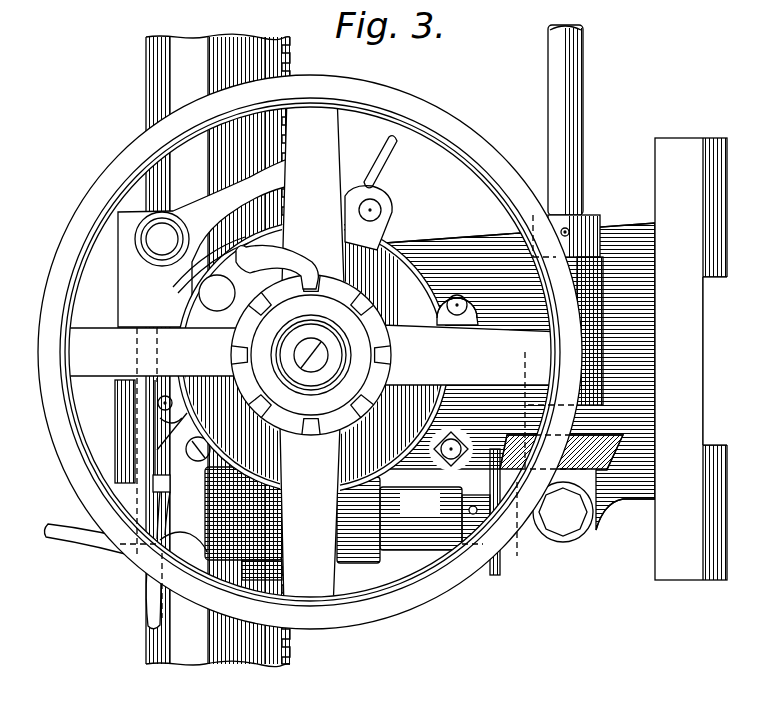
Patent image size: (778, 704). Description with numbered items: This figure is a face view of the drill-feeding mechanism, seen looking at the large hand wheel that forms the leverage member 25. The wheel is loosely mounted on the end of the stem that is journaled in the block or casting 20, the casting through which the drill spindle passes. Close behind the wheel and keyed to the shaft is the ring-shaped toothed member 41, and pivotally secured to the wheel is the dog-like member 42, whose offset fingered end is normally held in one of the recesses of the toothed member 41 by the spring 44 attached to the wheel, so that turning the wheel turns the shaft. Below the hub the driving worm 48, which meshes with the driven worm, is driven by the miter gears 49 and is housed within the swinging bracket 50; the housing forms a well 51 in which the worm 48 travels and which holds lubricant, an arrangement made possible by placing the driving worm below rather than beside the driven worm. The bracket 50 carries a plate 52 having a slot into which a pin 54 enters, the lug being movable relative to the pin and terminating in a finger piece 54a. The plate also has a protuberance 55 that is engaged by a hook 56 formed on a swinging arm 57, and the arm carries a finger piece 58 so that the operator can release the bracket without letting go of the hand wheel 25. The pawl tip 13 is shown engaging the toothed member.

The pawl 13 is at (314, 286).
The block or casting 20 is at (465, 243).
The leverage member 25 is at (310, 352).
The ring-shaped toothed member 41 is at (378, 338).
The dog-like member 42 is at (217, 286).
The spring 44 is at (287, 230).
The driving worm 48 is at (338, 507).
The miter gears 49 is at (583, 469).
The swinging bracket 50 is at (435, 518).
The well 51 is at (343, 536).
The plate 52 is at (183, 548).
The pin 54 is at (196, 462).
The finger piece 54a is at (168, 624).
The protuberance 55 is at (153, 487).
The hook 56 is at (184, 546).
The swinging arm 57 is at (162, 261).
The finger piece 58 is at (277, 164).